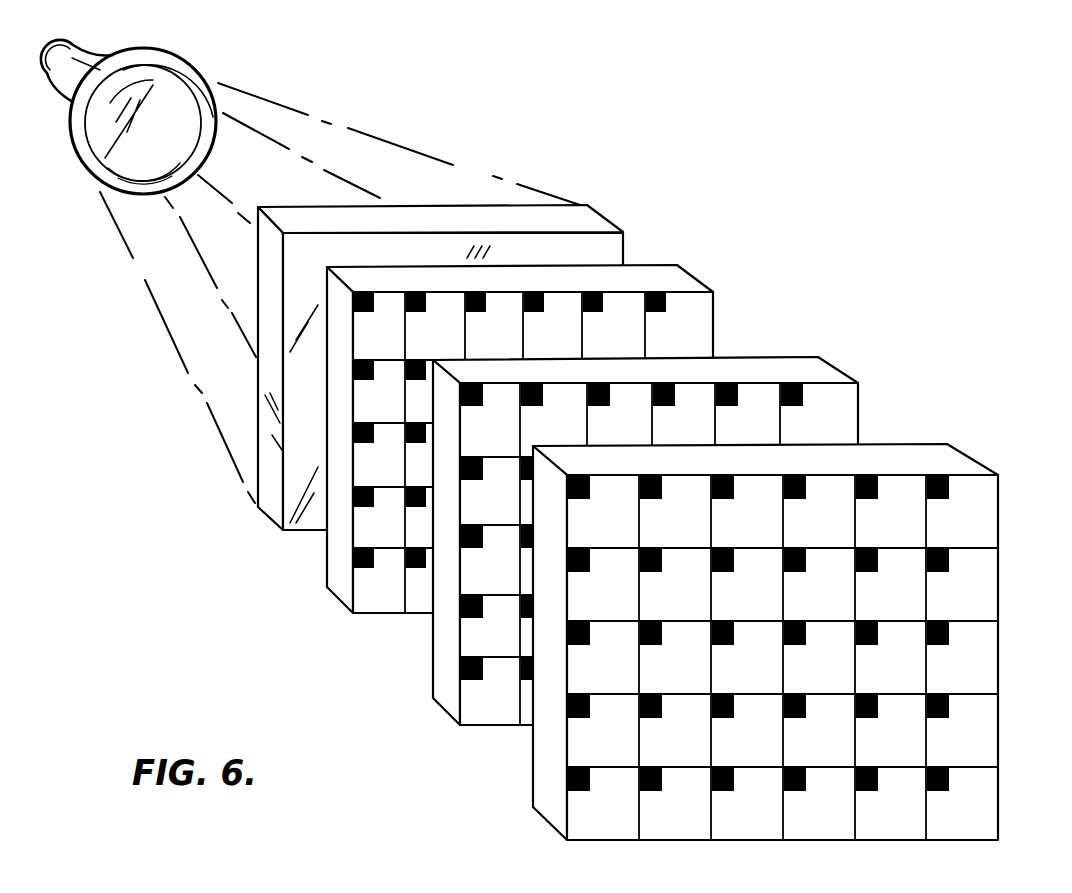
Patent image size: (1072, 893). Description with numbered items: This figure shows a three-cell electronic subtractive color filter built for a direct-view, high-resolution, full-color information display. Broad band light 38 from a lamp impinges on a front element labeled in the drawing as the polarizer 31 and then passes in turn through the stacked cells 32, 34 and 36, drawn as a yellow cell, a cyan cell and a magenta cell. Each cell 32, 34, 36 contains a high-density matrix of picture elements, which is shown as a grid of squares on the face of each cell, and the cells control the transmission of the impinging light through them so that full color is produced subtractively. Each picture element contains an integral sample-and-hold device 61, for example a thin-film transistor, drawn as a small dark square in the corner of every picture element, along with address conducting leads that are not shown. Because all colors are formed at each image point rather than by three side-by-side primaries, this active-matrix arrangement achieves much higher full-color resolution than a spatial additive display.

The light rays from light source 38 is at (408, 146).
The polarizer 31 is at (614, 226).
The cell 32 is at (702, 279).
The cell 34 is at (841, 376).
The cell 36 is at (974, 466).
The sample-and-hold device 61 is at (668, 298).